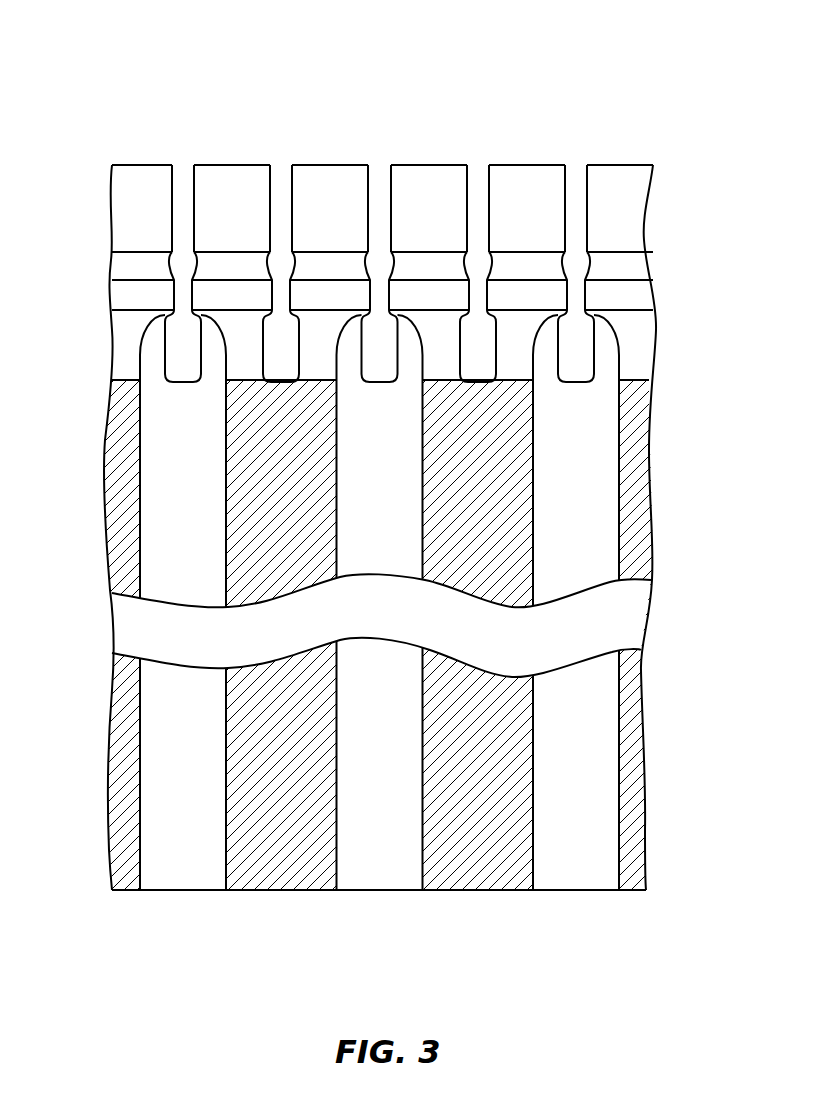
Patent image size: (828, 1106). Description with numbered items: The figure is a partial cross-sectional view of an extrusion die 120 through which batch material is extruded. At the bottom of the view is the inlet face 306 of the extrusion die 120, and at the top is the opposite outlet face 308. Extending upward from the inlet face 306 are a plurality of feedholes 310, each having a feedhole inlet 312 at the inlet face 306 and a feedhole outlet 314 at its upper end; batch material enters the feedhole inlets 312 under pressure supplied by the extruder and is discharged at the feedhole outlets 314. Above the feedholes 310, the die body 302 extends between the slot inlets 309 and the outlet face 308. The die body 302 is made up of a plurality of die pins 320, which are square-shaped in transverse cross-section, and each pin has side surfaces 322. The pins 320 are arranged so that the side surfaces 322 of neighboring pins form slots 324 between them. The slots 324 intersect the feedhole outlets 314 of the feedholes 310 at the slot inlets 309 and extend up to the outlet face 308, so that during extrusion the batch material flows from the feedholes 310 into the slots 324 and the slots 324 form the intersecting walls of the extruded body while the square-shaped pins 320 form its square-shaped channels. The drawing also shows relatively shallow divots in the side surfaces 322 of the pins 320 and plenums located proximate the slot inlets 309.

The extrusion die 120 is at (168, 80).
The die body 302 is at (109, 262).
The inlet face 306 is at (634, 898).
The outlet face 308 is at (614, 160).
The slot inlets 309 is at (162, 388).
The feedholes 310 is at (228, 890).
The feedhole inlets 312 is at (175, 892).
The feedhole outlets 314 is at (152, 358).
The die pins 320 is at (131, 165).
The side surfaces 322 is at (112, 221).
The slots 324 is at (182, 165).